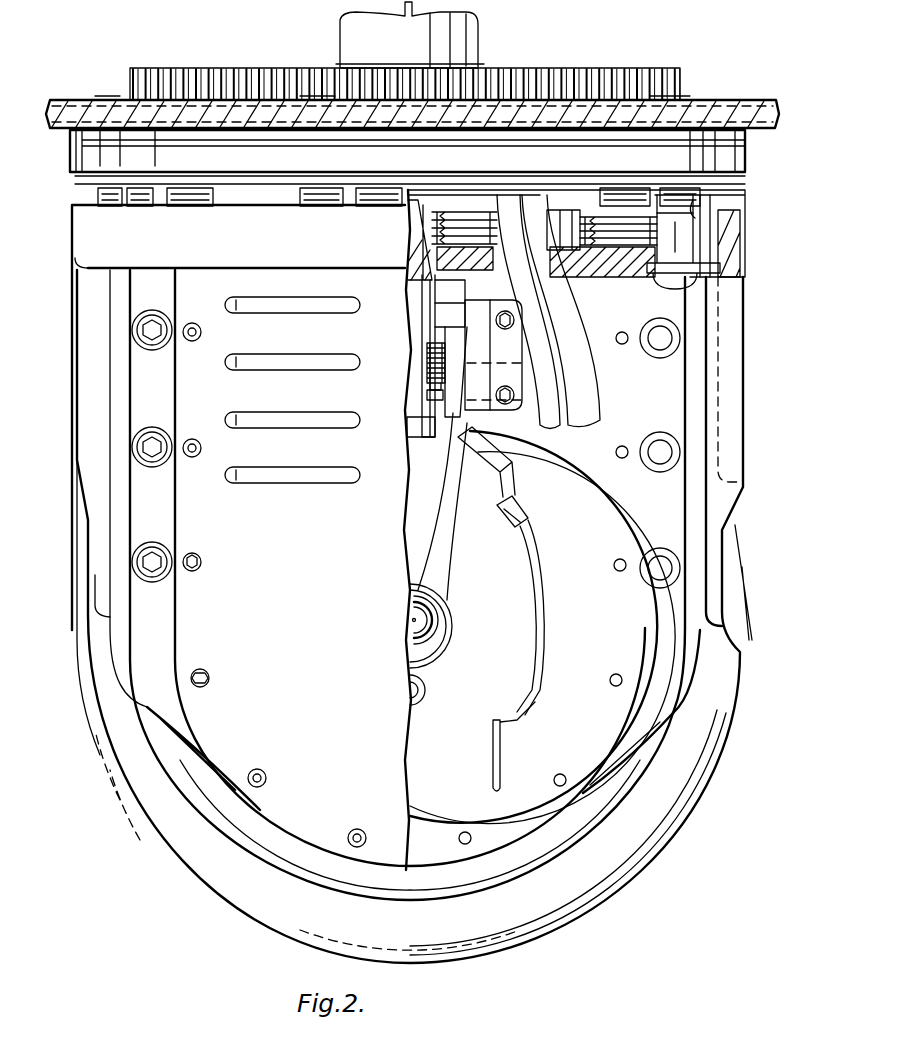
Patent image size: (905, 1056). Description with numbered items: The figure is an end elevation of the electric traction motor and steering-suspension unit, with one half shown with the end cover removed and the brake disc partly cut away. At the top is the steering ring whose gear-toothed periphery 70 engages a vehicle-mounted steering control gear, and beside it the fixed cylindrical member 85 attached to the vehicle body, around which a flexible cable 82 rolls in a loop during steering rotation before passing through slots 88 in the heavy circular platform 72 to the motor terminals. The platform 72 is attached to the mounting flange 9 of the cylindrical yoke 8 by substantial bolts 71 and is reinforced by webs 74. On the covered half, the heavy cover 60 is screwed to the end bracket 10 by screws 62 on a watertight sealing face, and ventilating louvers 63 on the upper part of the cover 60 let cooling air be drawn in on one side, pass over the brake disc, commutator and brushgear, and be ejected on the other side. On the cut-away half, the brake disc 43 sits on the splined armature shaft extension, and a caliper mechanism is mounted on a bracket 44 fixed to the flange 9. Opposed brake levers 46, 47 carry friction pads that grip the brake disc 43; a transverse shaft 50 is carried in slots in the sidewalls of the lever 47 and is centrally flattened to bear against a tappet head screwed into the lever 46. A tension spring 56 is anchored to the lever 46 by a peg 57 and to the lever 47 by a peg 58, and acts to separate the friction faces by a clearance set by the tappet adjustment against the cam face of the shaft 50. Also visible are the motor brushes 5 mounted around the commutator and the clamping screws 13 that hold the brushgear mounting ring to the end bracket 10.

The gear-toothed periphery 70 is at (145, 70).
The fixed cylindrical member 85 is at (482, 22).
The slots 88 is at (572, 277).
The circular platform 72 is at (632, 277).
The transverse shaft 50 is at (445, 312).
The peg 58 is at (427, 352).
The tension spring 56 is at (430, 378).
The peg 57 is at (427, 404).
The brake lever 46 is at (420, 436).
The bracket 44 is at (560, 372).
The mounting flange 9 is at (652, 372).
The flexible cable 82 is at (596, 395).
The webs 74 is at (80, 452).
The bolts 71 is at (152, 542).
The screws 62 is at (193, 552).
The ventilating louvers 63 is at (298, 447).
The cover 60 is at (322, 562).
The brake disc 43 is at (443, 548).
The brake lever 47 is at (505, 466).
The brushes 5 is at (512, 518).
The end bracket 10 is at (510, 636).
The cylindrical yoke 8 is at (598, 604).
The clamping screws 13 is at (424, 688).